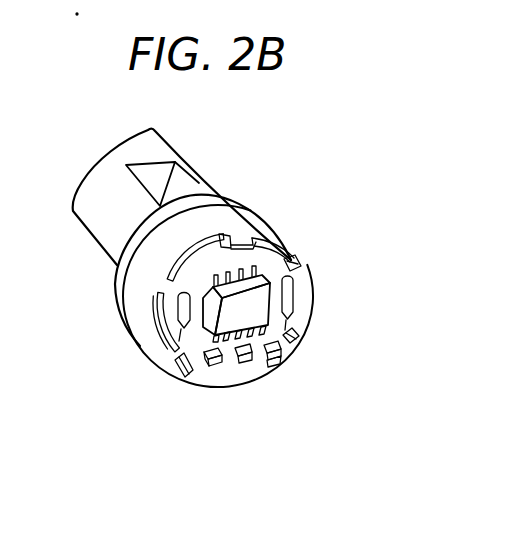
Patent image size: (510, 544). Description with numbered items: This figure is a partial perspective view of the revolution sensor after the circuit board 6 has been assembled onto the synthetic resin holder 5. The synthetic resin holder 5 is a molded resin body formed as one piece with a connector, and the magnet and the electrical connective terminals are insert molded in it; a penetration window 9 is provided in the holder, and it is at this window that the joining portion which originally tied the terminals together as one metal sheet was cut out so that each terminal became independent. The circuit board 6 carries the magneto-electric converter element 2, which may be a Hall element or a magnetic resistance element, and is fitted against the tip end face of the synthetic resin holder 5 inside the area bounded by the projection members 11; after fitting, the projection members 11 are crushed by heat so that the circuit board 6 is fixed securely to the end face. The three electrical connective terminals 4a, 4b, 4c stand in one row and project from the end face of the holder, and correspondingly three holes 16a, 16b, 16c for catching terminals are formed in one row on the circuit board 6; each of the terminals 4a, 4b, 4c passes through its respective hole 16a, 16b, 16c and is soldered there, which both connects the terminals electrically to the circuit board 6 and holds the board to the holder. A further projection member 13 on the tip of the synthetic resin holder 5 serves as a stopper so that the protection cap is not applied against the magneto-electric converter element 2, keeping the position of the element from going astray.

The magneto-electric converter element 2 is at (253, 313).
The electrical connective terminal 4a is at (217, 368).
The electrical connective terminal 4b is at (269, 366).
The electrical connective terminal 4c is at (284, 352).
The synthetic resin holder 5 is at (158, 152).
The circuit board 6 is at (156, 357).
The penetration window 9 is at (180, 190).
The projection member 11 is at (294, 258).
The projection member 13 is at (243, 243).
The hole for catching terminal 16a is at (206, 368).
The hole for catching terminal 16b is at (240, 365).
The hole for catching terminal 16c is at (283, 350).